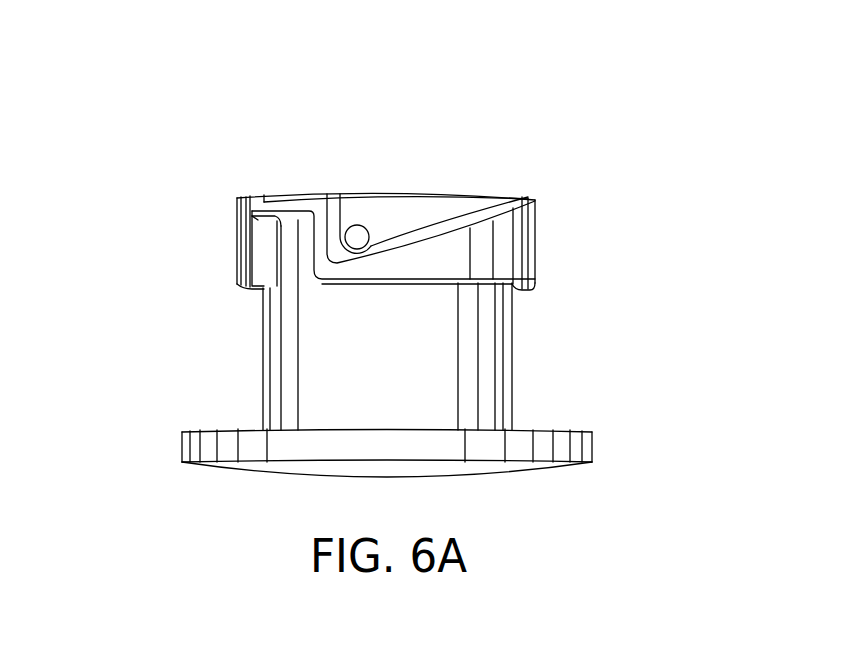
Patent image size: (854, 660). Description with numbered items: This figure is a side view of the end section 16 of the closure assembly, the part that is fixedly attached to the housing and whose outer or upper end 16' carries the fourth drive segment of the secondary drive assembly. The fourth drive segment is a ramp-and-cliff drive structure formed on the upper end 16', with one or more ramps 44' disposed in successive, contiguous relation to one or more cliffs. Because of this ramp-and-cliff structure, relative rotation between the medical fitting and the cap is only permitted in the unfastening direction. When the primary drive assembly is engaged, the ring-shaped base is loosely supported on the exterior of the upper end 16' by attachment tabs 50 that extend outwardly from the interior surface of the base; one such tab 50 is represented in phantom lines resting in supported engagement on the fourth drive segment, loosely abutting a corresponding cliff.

The ramp 44' is at (472, 127).
The attachment tab 50 is at (358, 236).
The upper end 16' is at (629, 192).
The end section 16 is at (460, 391).